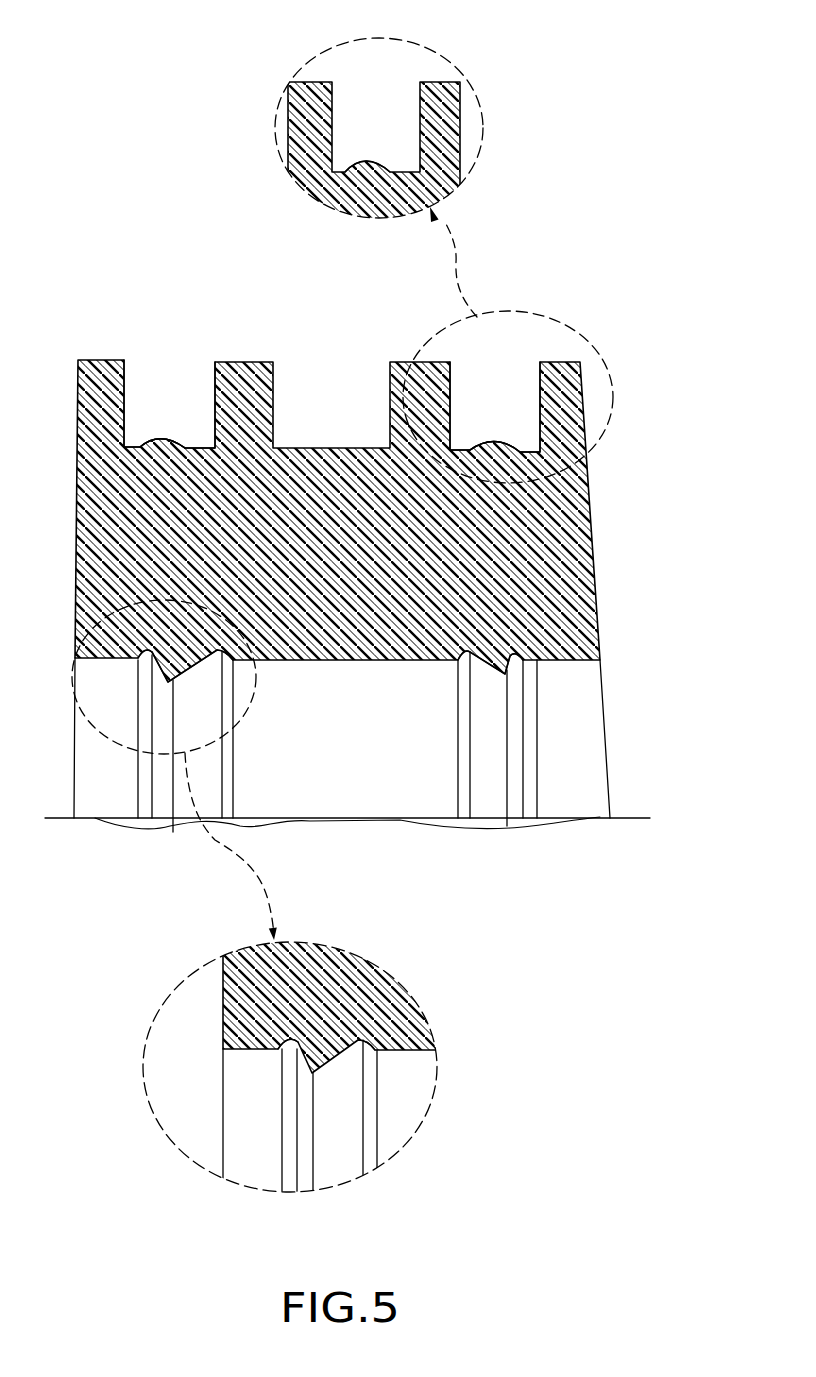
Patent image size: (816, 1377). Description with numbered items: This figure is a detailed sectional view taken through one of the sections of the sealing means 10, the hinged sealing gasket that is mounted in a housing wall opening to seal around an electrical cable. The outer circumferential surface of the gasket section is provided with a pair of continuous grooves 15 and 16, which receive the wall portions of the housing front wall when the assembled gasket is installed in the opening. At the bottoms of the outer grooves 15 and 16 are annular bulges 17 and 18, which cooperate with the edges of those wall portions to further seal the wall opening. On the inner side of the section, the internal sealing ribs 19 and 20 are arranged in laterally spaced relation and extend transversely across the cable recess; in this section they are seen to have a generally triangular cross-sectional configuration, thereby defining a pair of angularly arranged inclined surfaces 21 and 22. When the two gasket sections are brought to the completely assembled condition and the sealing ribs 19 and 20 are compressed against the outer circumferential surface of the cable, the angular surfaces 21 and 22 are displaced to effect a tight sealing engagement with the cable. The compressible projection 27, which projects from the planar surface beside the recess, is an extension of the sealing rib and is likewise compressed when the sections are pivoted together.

The sealing means 10 is at (592, 528).
The continuous groove 15 is at (183, 385).
The continuous groove 16 is at (511, 385).
The annular bulge 17 is at (162, 440).
The annular bulge 18 is at (491, 440).
The sealing rib 19 is at (165, 682).
The sealing rib 20 is at (503, 670).
The inclined surface 21 is at (165, 682).
The inclined surface 22 is at (217, 653).
The compressible projection 27 is at (173, 828).